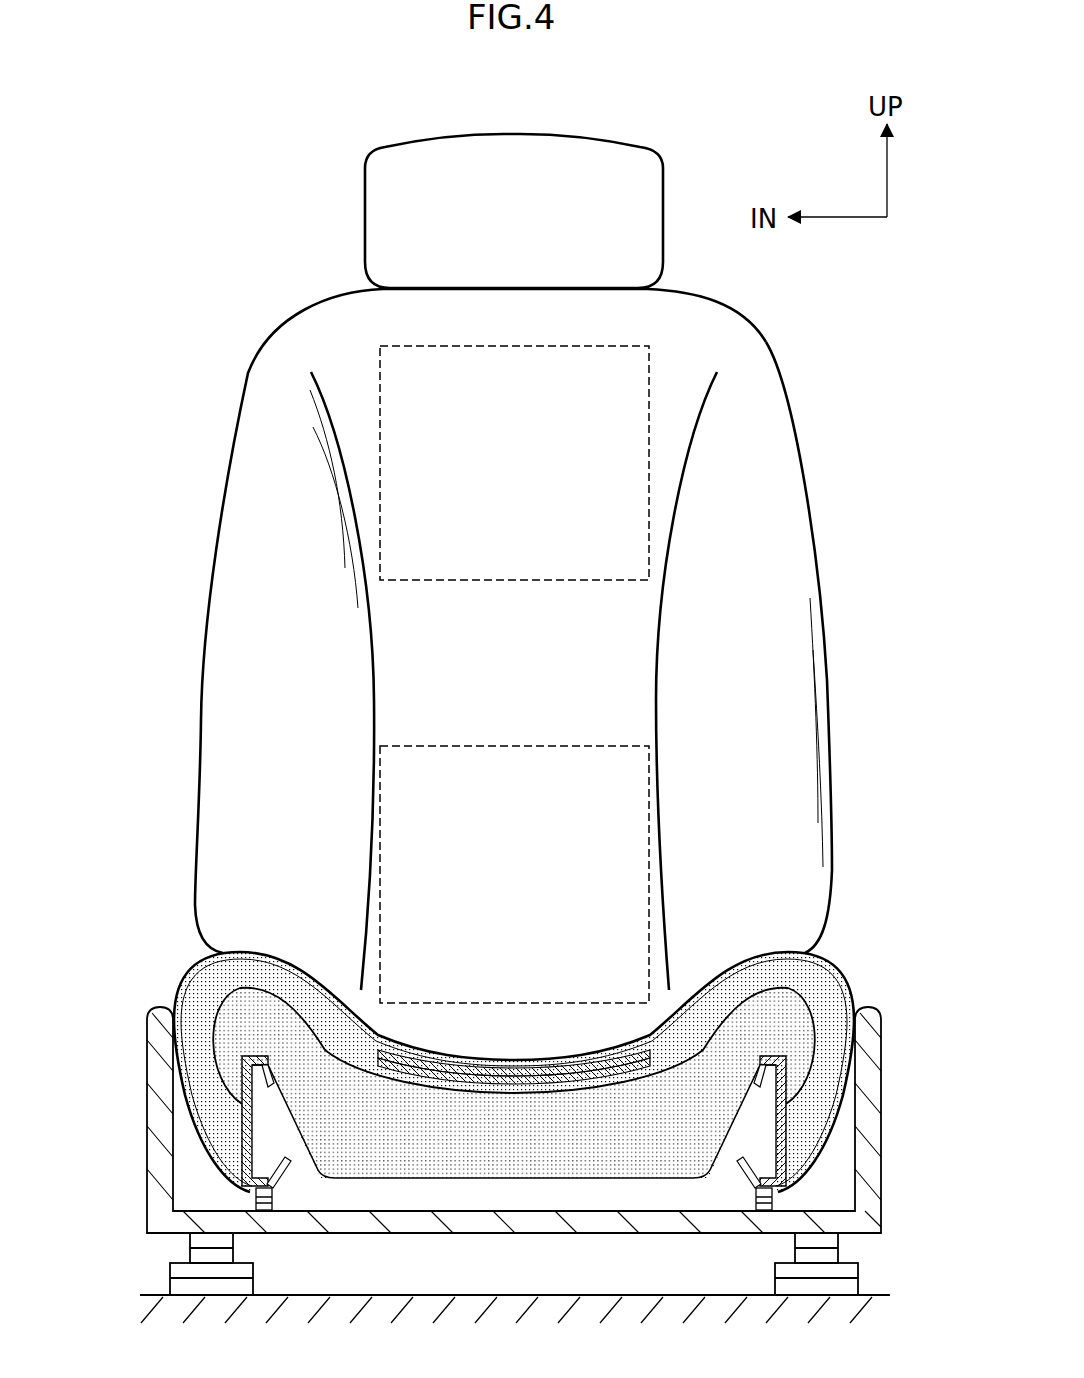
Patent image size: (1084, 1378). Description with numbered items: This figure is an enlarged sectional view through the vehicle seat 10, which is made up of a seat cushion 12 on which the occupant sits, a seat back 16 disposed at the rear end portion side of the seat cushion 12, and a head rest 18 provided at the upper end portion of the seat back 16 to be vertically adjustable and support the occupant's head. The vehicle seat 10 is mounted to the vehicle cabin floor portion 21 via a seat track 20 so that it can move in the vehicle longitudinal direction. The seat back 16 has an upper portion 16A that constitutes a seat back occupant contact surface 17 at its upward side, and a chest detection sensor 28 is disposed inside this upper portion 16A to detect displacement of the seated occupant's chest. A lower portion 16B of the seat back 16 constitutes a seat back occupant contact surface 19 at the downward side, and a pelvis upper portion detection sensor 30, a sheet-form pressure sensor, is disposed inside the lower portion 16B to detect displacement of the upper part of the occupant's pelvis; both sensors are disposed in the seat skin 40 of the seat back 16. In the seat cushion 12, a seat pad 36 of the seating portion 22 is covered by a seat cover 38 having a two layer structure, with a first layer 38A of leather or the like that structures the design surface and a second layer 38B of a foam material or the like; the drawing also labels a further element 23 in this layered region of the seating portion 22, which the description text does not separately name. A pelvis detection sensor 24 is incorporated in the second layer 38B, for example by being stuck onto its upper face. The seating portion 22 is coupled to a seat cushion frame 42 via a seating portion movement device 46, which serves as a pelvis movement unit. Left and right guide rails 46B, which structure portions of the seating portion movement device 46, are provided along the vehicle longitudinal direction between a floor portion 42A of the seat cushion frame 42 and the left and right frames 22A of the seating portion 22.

The vehicle seat 10 is at (176, 515).
The seat cushion 12 is at (140, 1036).
The seat back 16 is at (236, 371).
The upper portion of the seat back 16A is at (618, 480).
The lower portion of the seat back 16B is at (618, 830).
The seat back occupant contact surface 17 is at (588, 385).
The head rest 18 is at (670, 174).
The seat back occupant contact surface 19 is at (605, 781).
The seat track 20 is at (268, 1278).
The vehicle cabin floor portion 21 is at (490, 1295).
The seating portion 22 is at (183, 973).
The left and right frames of the seating portion 22A is at (253, 1133).
The cushion cover layer 23 is at (566, 1062).
The pelvis detection sensor 24 is at (522, 1062).
The chest detection sensor 28 is at (513, 336).
The pelvis upper portion detection sensor 30 is at (503, 740).
The seat pad 36 is at (352, 1062).
The seat cover 38 is at (527, 898).
The first layer 38A is at (490, 1050).
The second layer 38B is at (405, 1050).
The seat skin 40 is at (723, 342).
The seat cushion frame 42 is at (160, 1148).
The floor portion of the seat cushion frame 42A is at (518, 1211).
The seating portion movement device 46 is at (242, 1205).
The left and right guide rails 46B is at (280, 1193).